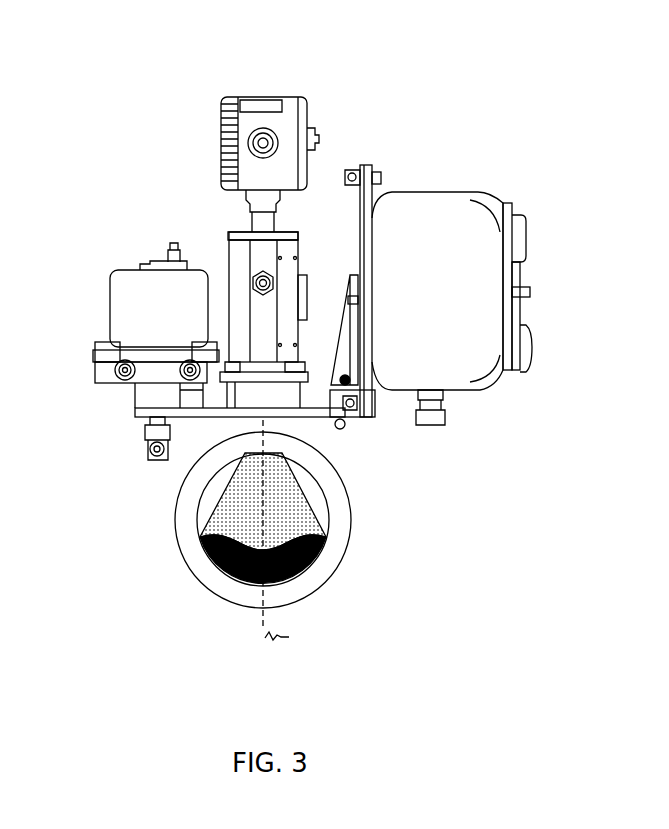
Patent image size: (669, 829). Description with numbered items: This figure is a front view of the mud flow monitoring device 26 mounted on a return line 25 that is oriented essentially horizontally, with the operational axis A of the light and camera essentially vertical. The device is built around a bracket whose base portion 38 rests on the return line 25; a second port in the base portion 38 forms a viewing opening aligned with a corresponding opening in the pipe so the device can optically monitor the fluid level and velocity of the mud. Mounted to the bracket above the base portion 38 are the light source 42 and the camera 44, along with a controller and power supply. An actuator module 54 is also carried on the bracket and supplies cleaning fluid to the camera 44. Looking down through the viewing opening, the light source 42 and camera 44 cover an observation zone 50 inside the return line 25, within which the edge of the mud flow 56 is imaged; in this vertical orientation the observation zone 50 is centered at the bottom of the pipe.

The return line 25 is at (352, 515).
The mud flow monitoring device 26 is at (392, 178).
The base portion 38 is at (133, 411).
The light source 42 is at (290, 125).
The camera 44 is at (288, 253).
The observation zone 50 is at (297, 502).
The actuator module 54 is at (132, 285).
The mud flow 56 is at (323, 553).